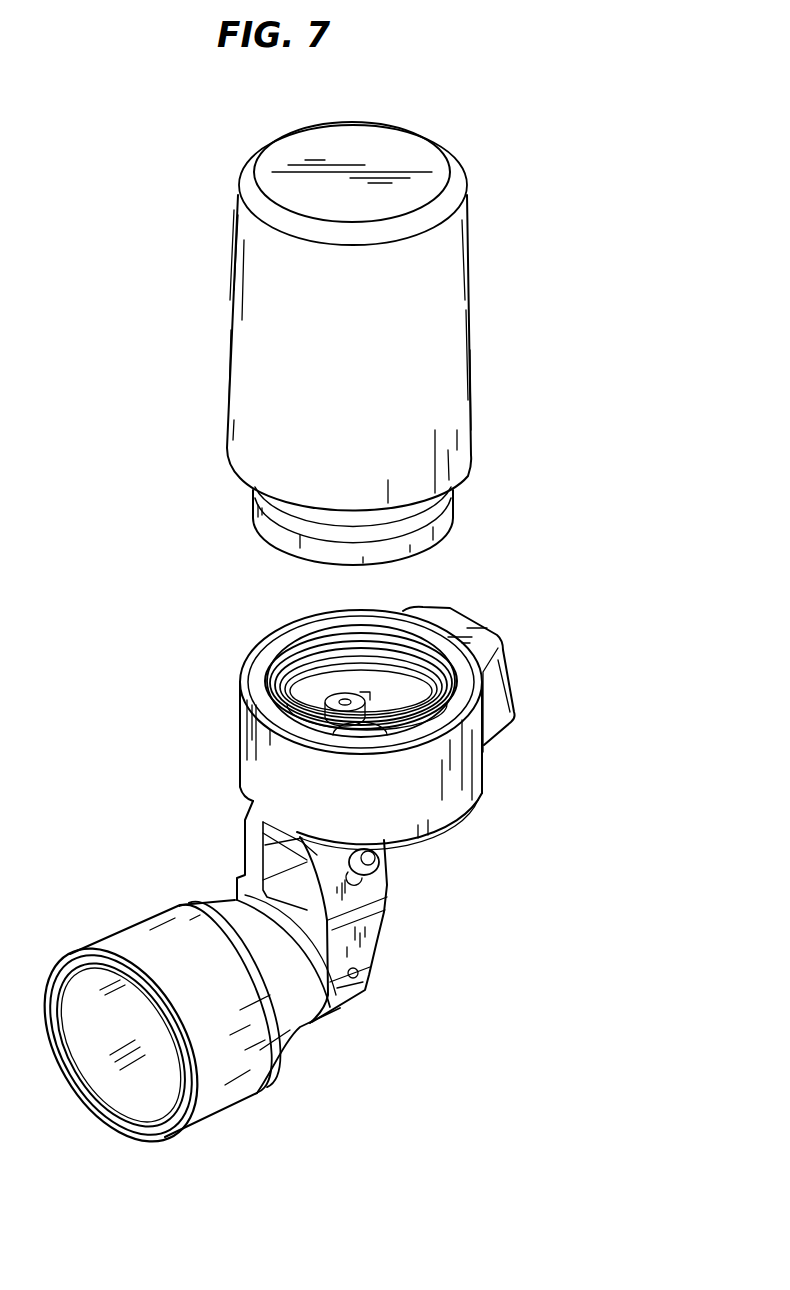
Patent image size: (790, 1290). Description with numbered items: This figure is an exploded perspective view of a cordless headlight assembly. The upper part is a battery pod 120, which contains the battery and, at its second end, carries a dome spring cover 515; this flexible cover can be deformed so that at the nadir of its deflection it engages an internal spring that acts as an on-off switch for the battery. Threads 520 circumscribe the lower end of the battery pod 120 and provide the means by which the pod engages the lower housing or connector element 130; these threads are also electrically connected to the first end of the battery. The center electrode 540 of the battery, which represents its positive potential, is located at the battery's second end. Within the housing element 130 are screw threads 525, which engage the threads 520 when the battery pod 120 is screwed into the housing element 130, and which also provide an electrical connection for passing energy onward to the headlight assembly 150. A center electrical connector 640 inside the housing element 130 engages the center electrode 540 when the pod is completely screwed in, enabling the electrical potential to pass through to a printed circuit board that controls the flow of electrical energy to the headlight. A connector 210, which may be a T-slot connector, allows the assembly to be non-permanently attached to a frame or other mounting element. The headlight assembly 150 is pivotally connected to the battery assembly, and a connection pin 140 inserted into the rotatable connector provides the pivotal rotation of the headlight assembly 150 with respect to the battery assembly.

The battery pod 120 is at (497, 240).
The dome spring cover 515 is at (397, 147).
The threads 520 is at (245, 492).
The center electrode 540 is at (438, 520).
The lower housing or connector element 130 is at (460, 772).
The screw threads 525 is at (300, 658).
The center electrical connector 640 is at (353, 730).
The connector 210 is at (482, 720).
The connection pin 140 is at (385, 876).
The headlight assembly 150 is at (222, 1072).